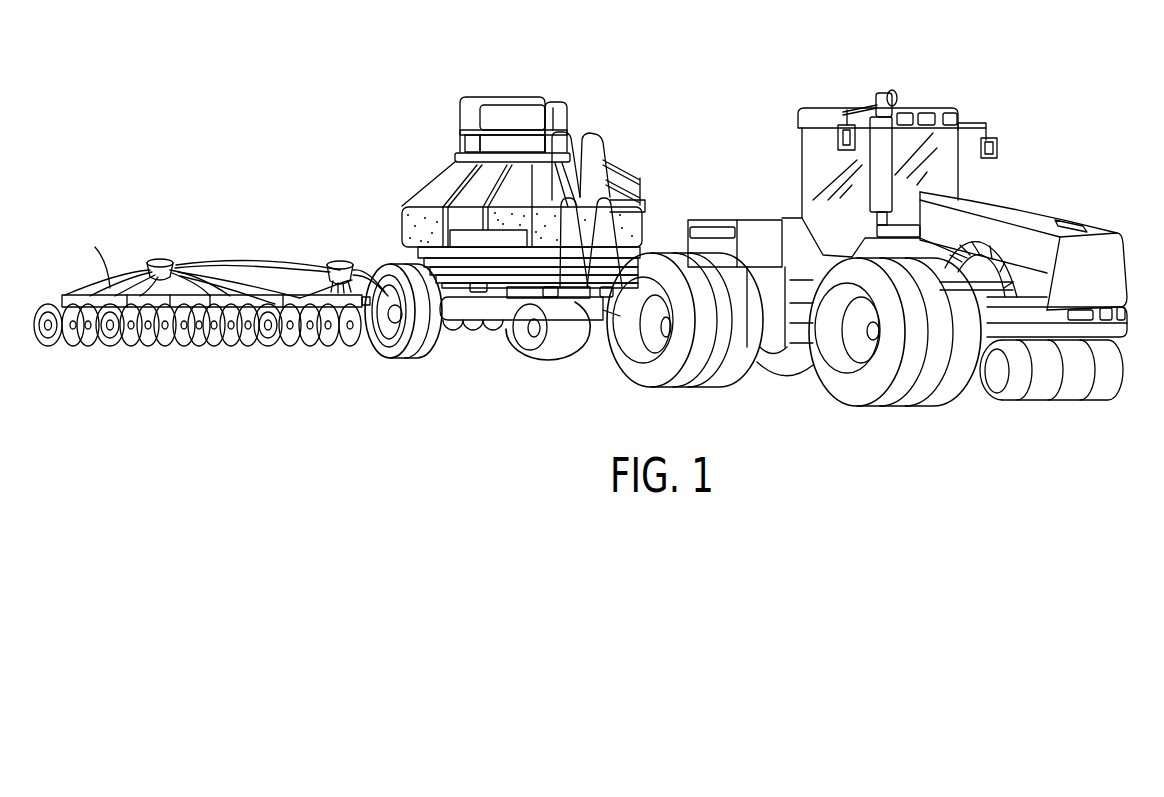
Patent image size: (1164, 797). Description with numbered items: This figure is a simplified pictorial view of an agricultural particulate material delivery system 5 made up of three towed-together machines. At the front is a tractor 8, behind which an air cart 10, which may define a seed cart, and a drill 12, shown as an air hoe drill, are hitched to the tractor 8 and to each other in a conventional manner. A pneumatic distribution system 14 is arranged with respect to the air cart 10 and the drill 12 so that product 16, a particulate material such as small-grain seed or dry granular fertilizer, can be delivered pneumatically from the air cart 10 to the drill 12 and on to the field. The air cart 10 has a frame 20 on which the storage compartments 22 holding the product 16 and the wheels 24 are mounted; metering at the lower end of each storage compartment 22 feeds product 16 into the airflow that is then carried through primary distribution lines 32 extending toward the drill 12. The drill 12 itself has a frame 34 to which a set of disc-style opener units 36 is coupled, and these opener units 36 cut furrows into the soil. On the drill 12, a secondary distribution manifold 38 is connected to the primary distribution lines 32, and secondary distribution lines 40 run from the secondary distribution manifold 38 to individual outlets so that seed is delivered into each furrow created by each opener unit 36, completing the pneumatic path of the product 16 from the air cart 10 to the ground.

The agricultural particulate material delivery system 5 is at (763, 58).
The tractor 8 is at (1081, 203).
The air cart 10 is at (577, 92).
The drill 12 is at (224, 176).
The pneumatic distribution system 14 is at (352, 250).
The product 16 is at (420, 218).
The frame 20 is at (522, 298).
The storage compartments 22 is at (448, 178).
The wheels 24 is at (418, 355).
The primary distribution lines 32 is at (187, 290).
The frame 34 is at (270, 300).
The opener units 36 is at (318, 355).
The secondary distribution manifold 38 is at (160, 262).
The secondary distribution lines 40 is at (112, 290).